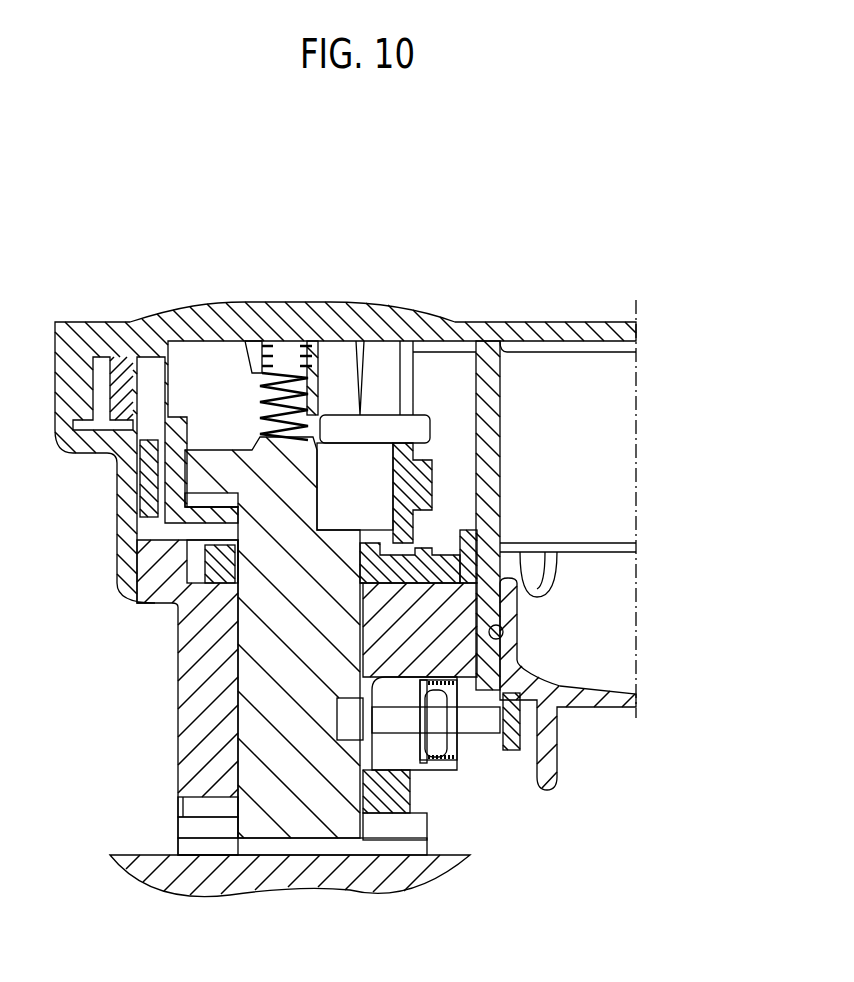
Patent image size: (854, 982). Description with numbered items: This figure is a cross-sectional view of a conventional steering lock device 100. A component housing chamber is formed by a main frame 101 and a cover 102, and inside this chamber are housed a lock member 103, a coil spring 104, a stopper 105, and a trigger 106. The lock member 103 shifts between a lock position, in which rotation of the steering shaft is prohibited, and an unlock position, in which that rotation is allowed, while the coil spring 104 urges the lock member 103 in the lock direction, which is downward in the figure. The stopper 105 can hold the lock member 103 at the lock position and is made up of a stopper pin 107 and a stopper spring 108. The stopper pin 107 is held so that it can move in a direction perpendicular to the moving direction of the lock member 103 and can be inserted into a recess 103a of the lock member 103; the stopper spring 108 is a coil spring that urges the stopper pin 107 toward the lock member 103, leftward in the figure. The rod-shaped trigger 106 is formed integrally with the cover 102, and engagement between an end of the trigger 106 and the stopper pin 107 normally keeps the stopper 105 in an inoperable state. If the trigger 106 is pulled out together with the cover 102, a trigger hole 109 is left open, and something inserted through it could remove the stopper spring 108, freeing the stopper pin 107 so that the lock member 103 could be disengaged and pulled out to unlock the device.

The steering lock device 100 is at (462, 303).
The main frame 101 is at (188, 663).
The cover 102 is at (303, 320).
The lock member 103 is at (290, 810).
The recess 103a is at (350, 740).
The coil spring 104 is at (252, 345).
The stopper 105 is at (503, 708).
The trigger 106 is at (493, 420).
The stopper pin 107 is at (398, 765).
The stopper spring 108 is at (443, 770).
The trigger hole 109 is at (503, 648).